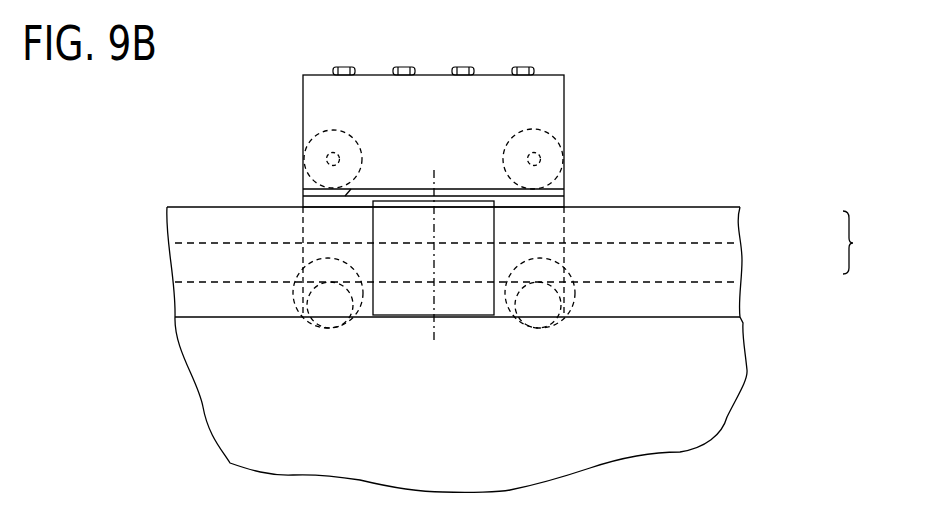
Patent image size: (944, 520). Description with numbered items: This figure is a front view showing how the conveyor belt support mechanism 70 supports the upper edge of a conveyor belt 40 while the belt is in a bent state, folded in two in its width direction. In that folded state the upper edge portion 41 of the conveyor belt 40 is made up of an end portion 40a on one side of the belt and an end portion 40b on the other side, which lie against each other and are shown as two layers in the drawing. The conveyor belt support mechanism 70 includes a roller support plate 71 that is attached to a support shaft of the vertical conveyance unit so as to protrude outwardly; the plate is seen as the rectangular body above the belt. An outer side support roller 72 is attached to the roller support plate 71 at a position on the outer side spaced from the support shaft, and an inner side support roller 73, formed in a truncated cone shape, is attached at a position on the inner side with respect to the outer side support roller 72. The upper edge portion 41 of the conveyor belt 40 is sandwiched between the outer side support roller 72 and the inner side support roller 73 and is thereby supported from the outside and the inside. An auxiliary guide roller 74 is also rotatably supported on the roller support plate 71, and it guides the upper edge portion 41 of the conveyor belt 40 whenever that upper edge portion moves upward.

The conveyor belt 40 is at (735, 352).
The end portion on one side 40a is at (723, 225).
The end portion on the other side 40b is at (723, 257).
The upper edge portion 41 is at (864, 242).
The conveyor belt support mechanism 70 is at (590, 65).
The roller support plate 71 is at (565, 93).
The outer side support roller 72 is at (455, 305).
The inner side support roller 73 is at (292, 320).
The auxiliary guide roller 74 is at (303, 143).